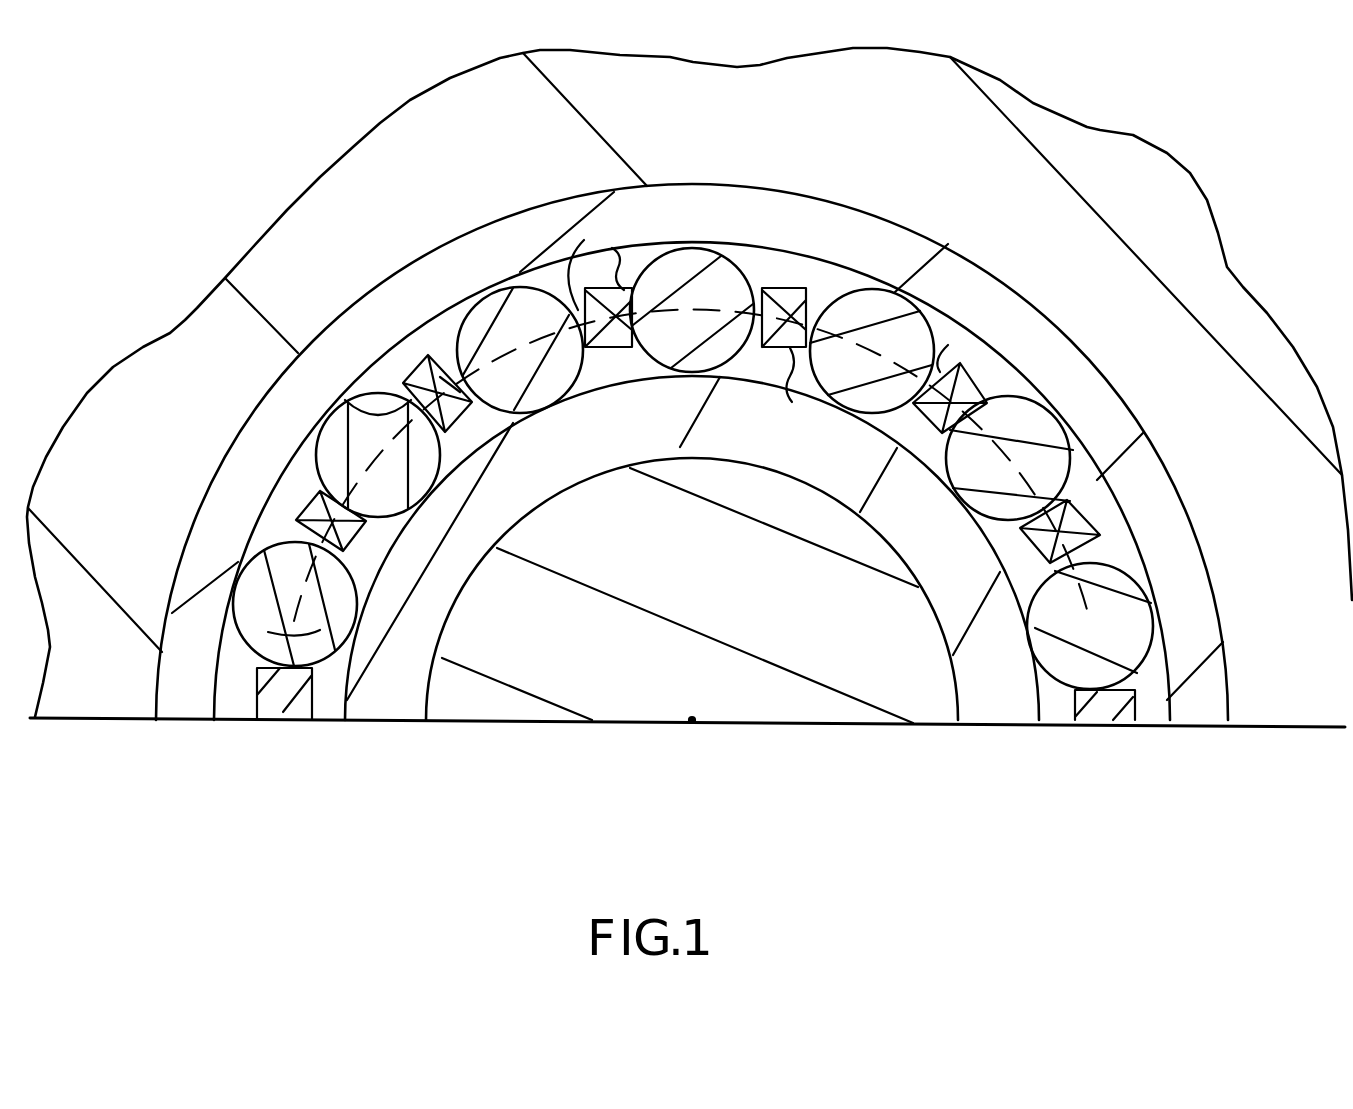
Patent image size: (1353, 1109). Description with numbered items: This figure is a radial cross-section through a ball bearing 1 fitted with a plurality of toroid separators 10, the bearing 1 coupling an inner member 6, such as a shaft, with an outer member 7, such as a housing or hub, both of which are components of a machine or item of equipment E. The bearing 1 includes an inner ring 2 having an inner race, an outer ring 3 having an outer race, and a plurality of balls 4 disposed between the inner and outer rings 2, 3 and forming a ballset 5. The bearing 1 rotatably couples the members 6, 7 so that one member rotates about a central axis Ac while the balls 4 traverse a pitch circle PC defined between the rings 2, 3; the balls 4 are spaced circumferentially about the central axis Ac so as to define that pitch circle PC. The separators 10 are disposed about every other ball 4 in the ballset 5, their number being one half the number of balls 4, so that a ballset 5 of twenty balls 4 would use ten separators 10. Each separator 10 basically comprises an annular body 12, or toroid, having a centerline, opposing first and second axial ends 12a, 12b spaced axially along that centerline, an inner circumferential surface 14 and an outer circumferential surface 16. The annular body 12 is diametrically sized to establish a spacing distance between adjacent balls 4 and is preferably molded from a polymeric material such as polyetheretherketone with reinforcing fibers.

The ball bearing 1 is at (702, 247).
The inner ring 2 is at (381, 712).
The outer ring 3 is at (1105, 382).
The ball 4 is at (478, 298).
The ballset 5 is at (946, 320).
The inner member 6 is at (816, 716).
The outer member 7 is at (1130, 176).
The toroid separator 10 is at (783, 282).
The annular body 12 is at (617, 354).
The first axial end 12a is at (628, 280).
The second axial end 12b is at (792, 374).
The inner circumferential surface 14 is at (358, 406).
The outer circumferential surface 16 is at (206, 632).
The machine or item of equipment E is at (264, 89).
The pitch circle PC is at (546, 272).
The central axis Ac is at (696, 719).